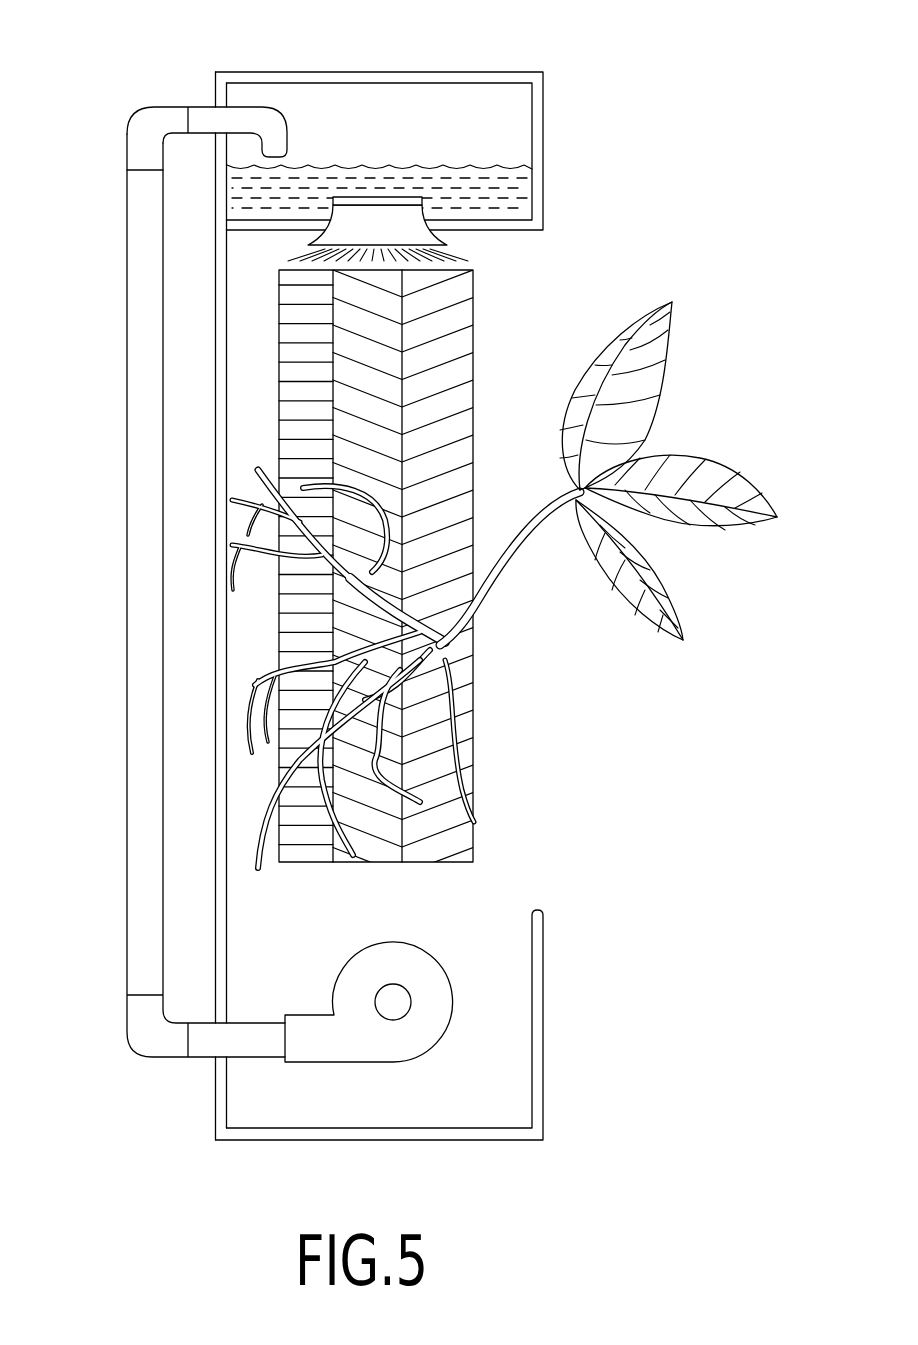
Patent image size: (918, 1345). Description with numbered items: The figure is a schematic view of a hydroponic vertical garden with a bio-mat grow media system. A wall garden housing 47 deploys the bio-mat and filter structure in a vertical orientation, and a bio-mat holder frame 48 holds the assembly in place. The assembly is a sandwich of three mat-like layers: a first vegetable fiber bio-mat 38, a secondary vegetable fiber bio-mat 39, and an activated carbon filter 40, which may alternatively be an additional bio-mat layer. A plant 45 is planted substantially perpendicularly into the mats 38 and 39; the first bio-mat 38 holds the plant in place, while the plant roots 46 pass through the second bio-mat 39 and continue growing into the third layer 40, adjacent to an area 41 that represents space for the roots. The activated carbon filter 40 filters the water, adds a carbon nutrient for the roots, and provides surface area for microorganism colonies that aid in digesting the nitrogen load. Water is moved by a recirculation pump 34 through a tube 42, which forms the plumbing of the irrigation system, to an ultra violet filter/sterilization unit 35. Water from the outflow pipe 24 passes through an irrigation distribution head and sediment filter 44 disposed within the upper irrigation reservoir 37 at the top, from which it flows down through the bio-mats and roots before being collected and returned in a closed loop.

The outflow pipe 24 is at (253, 107).
The recirculation pump 34 is at (449, 967).
The ultra violet filter/sterilization unit 35 is at (545, 1060).
The upper irrigation reservoir 37 is at (543, 113).
The vegetable fiber bio-mat 38 is at (477, 743).
The secondary vegetable fiber bio-mat 39 is at (390, 832).
The activated carbon filter 40 is at (295, 370).
The area for plant roots 41 is at (250, 778).
The tube 42 is at (127, 847).
The irrigation distribution head and sediment filter 44 is at (360, 197).
The plant 45 is at (673, 340).
The plant roots 46 is at (390, 697).
The wall garden housing 47 is at (215, 443).
The bio-mat holder frame 48 is at (278, 313).